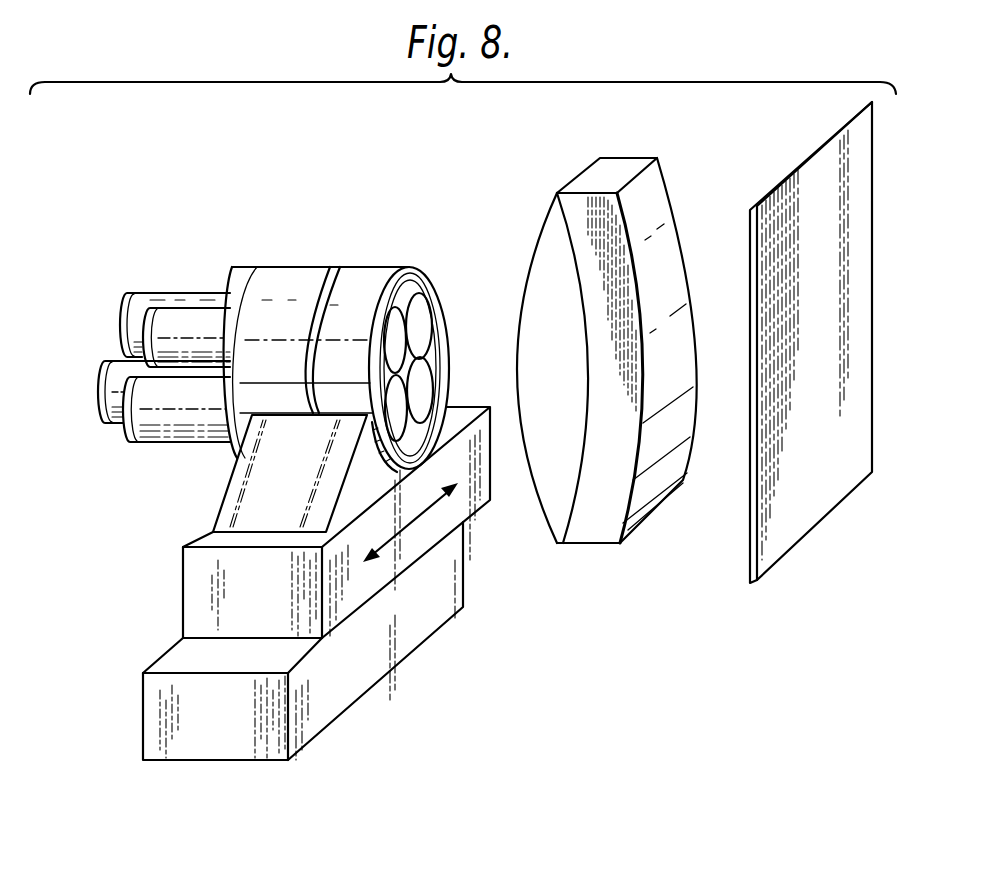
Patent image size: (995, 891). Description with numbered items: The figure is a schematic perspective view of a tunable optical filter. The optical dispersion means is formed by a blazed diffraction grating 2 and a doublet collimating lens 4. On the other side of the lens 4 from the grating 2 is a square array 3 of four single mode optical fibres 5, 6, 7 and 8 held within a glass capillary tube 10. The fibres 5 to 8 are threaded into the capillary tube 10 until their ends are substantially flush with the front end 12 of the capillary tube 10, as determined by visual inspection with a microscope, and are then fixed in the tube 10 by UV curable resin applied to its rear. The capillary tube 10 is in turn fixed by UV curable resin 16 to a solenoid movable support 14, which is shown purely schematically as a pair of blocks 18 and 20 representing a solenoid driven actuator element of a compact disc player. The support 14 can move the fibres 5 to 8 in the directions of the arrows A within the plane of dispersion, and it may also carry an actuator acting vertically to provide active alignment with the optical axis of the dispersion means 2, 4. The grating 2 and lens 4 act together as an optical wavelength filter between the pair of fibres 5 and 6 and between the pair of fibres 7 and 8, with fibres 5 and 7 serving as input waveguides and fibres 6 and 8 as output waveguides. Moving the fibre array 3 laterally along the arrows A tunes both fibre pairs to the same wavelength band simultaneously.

The blazed diffraction grating 2 is at (812, 513).
The square array of optical fibres 3 is at (458, 327).
The doublet collimating lens 4 is at (592, 545).
The single mode optical fibre 5 is at (165, 320).
The single mode optical fibre 6 is at (108, 402).
The single mode optical fibre 7 is at (178, 421).
The single mode optical fibre 8 is at (184, 300).
The glass capillary tube 10 is at (372, 268).
The front end of the capillary tube 12 is at (232, 285).
The solenoid movable support 14 is at (160, 594).
The UV curable resin 16 is at (247, 478).
The block 18 is at (460, 510).
The block 20 is at (375, 677).
The arrows A is at (410, 519).